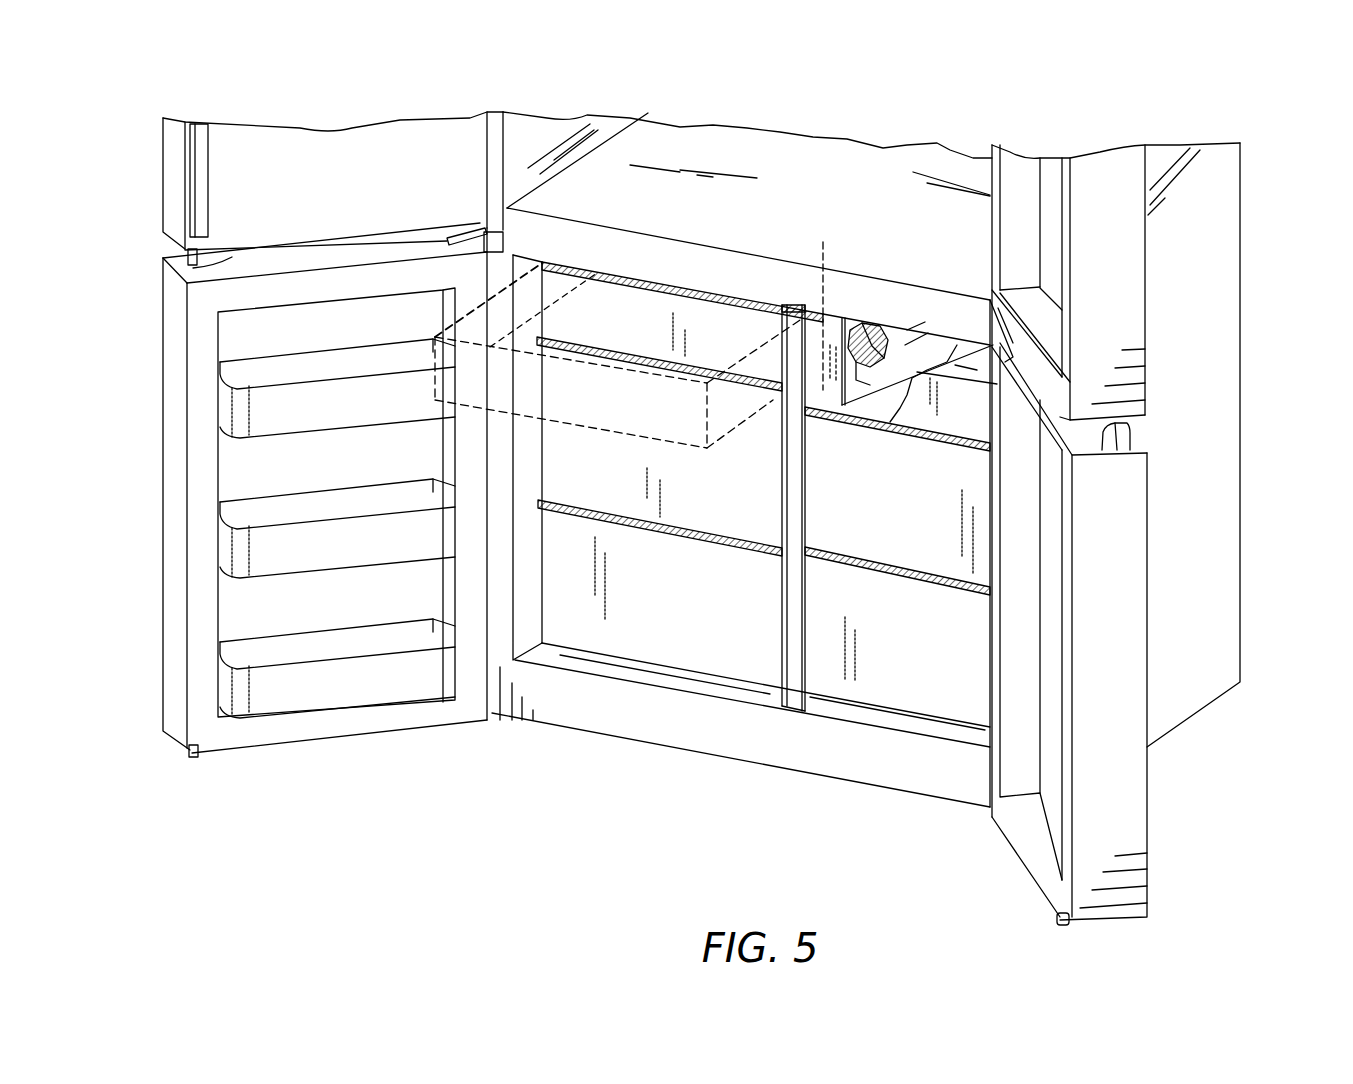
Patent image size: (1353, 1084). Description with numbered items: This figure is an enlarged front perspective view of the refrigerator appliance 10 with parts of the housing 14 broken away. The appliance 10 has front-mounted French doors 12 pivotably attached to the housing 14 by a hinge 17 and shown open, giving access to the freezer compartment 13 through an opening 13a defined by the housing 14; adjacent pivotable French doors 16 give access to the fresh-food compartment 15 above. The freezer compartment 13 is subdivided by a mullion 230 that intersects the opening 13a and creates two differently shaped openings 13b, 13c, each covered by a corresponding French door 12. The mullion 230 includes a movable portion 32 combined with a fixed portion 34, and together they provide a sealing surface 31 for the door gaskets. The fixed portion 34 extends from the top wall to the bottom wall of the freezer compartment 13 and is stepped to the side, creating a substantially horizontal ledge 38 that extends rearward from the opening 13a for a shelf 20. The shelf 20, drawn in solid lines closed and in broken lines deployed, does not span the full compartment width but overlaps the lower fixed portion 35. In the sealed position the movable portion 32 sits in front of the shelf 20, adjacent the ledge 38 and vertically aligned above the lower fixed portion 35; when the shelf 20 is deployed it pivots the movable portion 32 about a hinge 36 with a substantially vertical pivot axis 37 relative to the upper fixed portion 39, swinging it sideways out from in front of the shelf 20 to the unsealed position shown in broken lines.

The refrigerator appliance 10 is at (232, 76).
The French doors 12 is at (177, 713).
The freezer compartment 13 is at (660, 720).
The opening 13a is at (713, 712).
The opening 13b is at (595, 665).
The opening 13c is at (915, 717).
The housing 14 is at (1185, 557).
The fresh-food compartment 15 is at (740, 128).
The French doors 16 is at (175, 182).
The hinge 17 is at (1008, 347).
The shelf 20 is at (566, 298).
The mullion 230 is at (764, 571).
The sealing surface 31 is at (782, 343).
The movable portion 32 is at (790, 298).
The fixed portion 34 is at (820, 595).
The lower fixed portion 35 is at (800, 708).
The hinge 36 is at (840, 318).
The pivot axis 37 is at (822, 253).
The ledge 38 is at (872, 367).
The upper fixed portion 39 is at (846, 326).